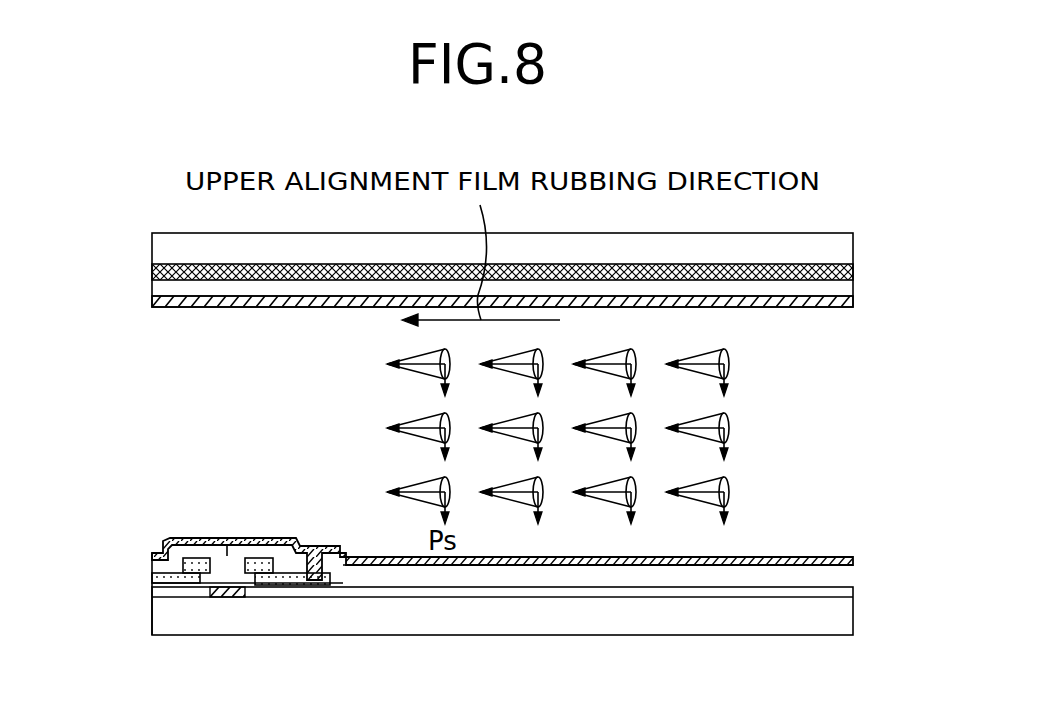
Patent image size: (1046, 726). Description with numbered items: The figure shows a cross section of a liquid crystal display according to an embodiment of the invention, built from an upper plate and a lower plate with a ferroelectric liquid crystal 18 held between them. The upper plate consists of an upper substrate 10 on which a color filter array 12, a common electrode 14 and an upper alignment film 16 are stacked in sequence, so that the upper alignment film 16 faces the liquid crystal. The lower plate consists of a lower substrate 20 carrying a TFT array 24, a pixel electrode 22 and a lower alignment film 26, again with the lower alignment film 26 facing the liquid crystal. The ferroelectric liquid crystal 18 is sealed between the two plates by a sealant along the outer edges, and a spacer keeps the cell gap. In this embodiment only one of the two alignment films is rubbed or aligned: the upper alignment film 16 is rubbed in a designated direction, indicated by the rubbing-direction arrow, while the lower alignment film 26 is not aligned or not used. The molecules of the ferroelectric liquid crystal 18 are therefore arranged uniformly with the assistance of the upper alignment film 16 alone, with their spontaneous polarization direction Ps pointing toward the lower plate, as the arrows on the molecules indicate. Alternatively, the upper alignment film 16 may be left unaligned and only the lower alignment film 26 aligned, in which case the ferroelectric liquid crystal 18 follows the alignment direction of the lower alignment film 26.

The upper substrate 10 is at (853, 242).
The color filter array 12 is at (853, 270).
The common electrode 14 is at (848, 290).
The upper alignment film 16 is at (853, 306).
The ferroelectric liquid crystal 18 is at (400, 432).
The lower substrate 20 is at (830, 626).
The pixel electrode 22 is at (850, 562).
The TFT array 24 is at (142, 573).
The lower alignment film 26 is at (826, 557).